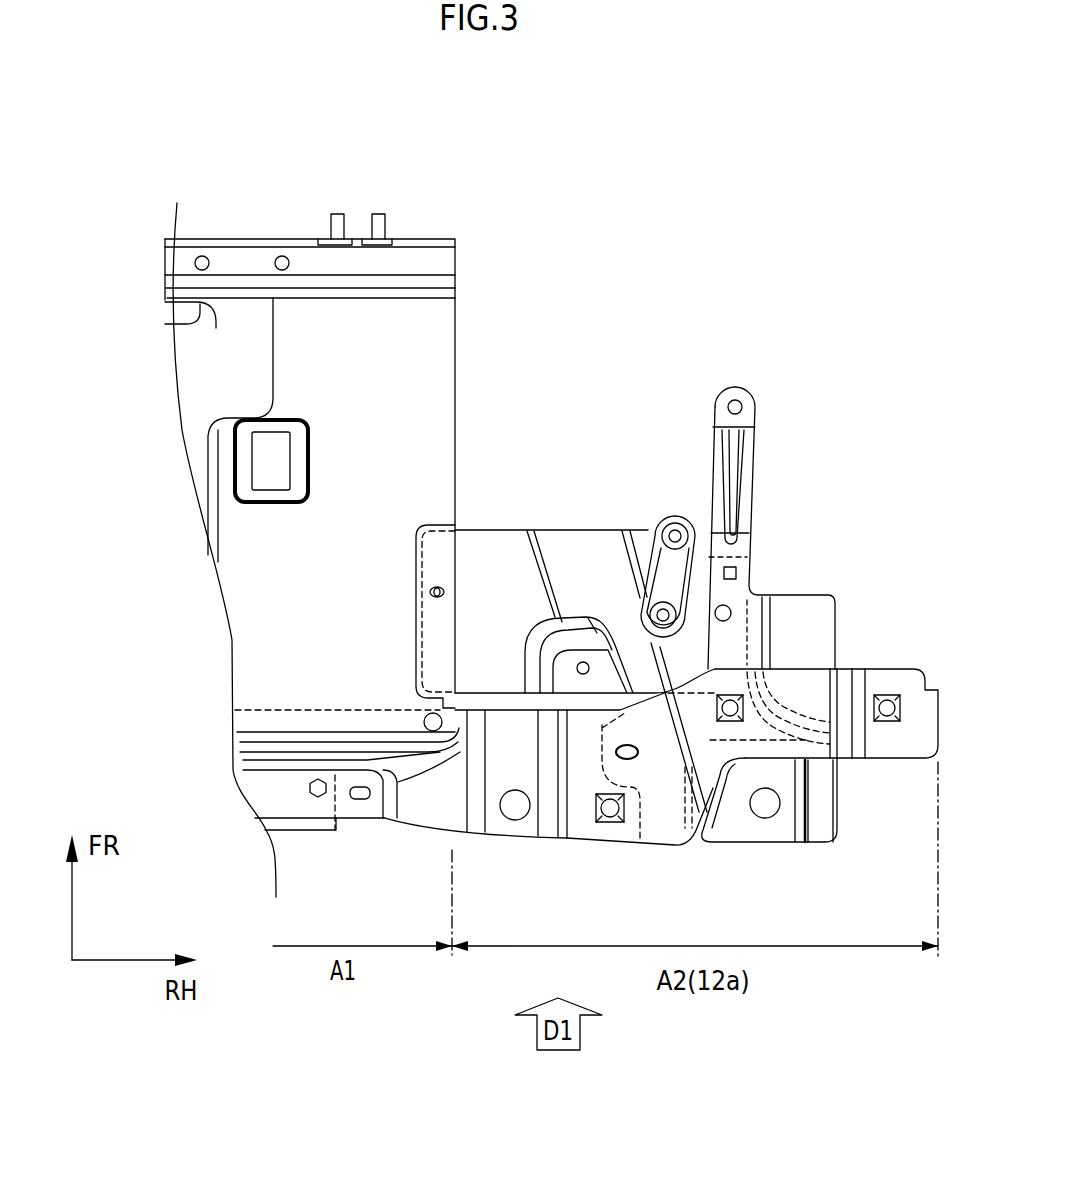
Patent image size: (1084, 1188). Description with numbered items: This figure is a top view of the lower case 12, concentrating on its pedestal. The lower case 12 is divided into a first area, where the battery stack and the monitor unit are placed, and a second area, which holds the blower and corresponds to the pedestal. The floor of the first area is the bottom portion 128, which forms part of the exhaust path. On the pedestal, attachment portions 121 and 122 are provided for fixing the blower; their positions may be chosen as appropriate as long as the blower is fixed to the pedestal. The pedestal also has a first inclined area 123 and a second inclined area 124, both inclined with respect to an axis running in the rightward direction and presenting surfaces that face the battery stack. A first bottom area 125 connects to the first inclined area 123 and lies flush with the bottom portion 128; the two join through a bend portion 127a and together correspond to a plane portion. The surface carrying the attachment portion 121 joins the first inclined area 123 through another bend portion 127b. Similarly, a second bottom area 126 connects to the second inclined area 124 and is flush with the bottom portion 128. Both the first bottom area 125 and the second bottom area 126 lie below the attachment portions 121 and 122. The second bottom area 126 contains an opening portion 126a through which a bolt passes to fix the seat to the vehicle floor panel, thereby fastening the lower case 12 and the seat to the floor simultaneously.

The lower case 12 is at (506, 238).
The attachment portion 121 is at (675, 528).
The attachment portion 122 is at (733, 694).
The first inclined area 123 is at (580, 573).
The second inclined area 124 is at (550, 805).
The first bottom area 125 is at (492, 572).
The second bottom area 126 is at (507, 745).
The opening portion 126a is at (525, 820).
The bend portion 127a is at (551, 580).
The bend portion 127b is at (617, 580).
The bottom portion 128 is at (383, 385).